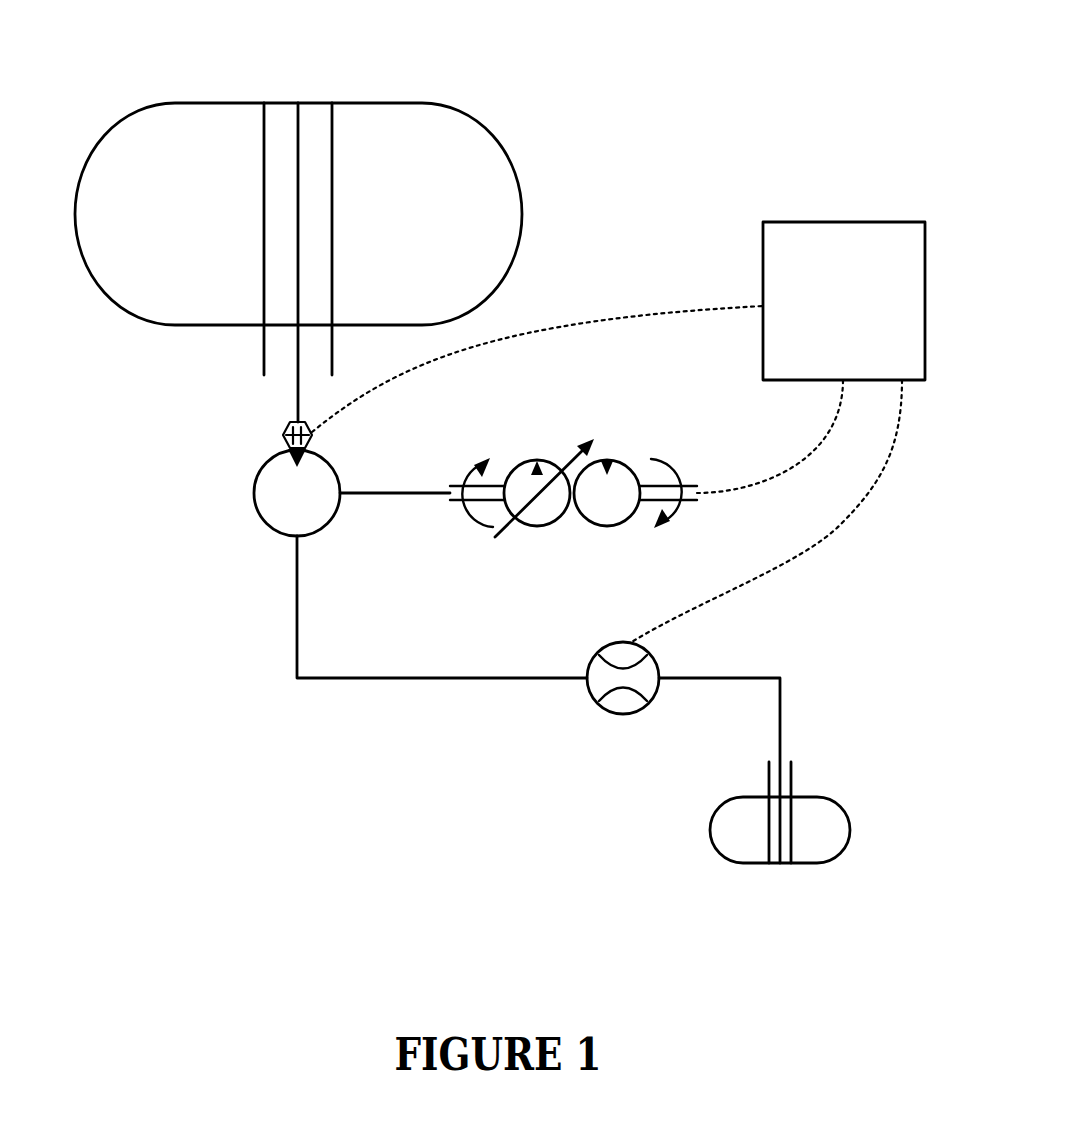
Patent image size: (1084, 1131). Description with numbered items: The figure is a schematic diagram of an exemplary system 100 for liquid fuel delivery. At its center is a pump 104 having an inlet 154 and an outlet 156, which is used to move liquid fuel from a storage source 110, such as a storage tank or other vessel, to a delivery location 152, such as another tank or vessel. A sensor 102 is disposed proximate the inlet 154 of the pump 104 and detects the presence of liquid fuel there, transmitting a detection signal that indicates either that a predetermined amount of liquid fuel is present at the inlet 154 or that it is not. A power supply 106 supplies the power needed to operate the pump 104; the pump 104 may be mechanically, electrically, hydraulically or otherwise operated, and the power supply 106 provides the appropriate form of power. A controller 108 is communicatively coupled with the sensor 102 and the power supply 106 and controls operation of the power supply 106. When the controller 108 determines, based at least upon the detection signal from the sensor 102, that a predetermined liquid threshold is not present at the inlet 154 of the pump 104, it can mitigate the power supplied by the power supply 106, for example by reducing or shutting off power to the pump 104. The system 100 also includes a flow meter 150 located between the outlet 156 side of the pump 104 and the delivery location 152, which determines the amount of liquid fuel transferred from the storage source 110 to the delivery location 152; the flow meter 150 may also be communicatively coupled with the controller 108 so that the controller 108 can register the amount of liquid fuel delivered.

The system for liquid fuel delivery 100 is at (776, 47).
The sensor 102 is at (288, 448).
The pump 104 is at (255, 493).
The power supply 106 is at (551, 447).
The controller 108 is at (763, 222).
The storage source 110 is at (511, 160).
The flow meter 150 is at (606, 710).
The delivery location 152 is at (717, 812).
The inlet 154 is at (288, 451).
The outlet 156 is at (292, 538).